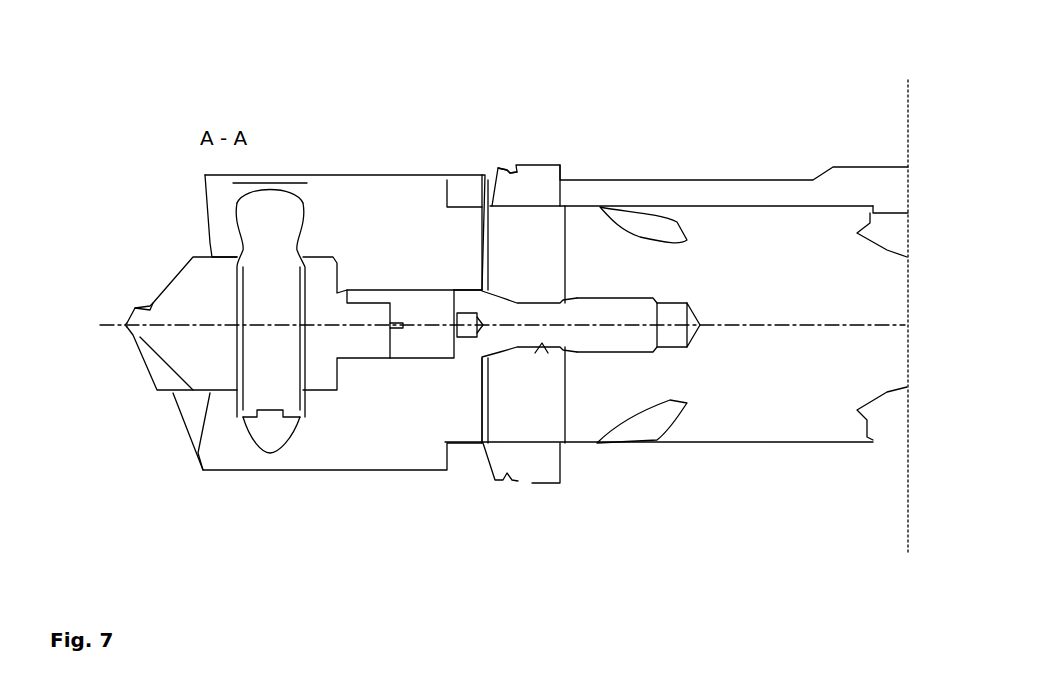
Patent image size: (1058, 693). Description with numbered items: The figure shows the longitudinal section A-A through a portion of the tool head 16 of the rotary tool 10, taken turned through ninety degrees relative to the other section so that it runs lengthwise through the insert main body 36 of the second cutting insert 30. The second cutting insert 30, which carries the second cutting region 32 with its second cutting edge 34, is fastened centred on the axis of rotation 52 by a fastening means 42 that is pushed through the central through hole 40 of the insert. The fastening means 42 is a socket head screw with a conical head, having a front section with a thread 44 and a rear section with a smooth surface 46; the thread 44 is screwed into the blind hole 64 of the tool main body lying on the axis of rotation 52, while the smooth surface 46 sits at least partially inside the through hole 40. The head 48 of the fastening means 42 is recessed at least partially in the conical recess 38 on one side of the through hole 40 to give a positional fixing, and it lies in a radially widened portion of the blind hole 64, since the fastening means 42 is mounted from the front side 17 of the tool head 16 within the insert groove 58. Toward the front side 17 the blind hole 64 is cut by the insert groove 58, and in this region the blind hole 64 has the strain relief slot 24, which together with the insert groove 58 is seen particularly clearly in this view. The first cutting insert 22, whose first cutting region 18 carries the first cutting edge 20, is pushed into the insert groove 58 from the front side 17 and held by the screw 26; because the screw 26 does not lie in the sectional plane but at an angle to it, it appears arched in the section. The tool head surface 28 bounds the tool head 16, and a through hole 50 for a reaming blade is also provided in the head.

The rotary tool 10 is at (452, 92).
The tool head 16 is at (842, 180).
The front side 17 is at (102, 319).
The first cutting region 18 is at (133, 335).
The first cutting edge 20 is at (65, 396).
The first cutting insert 22 is at (190, 307).
The strain relief slot 24 is at (392, 360).
The screw for cutting insert 26 is at (272, 398).
The tool head surface 28 is at (743, 443).
The second cutting insert 30 is at (548, 173).
The second cutting region 32 is at (523, 168).
The second cutting edge 34 is at (528, 473).
The insert main body 36 is at (488, 380).
The conical recess 38 is at (502, 353).
The through hole for fastening means 40 is at (532, 300).
The fastening means 42 is at (632, 315).
The thread 44 is at (633, 347).
The smooth surface 46 is at (543, 345).
The head of fastening means 48 is at (467, 340).
The through hole for reaming blade 50 is at (504, 274).
The axis of rotation 52 is at (800, 325).
The insert groove 58 is at (351, 332).
The blind hole 64 is at (428, 315).